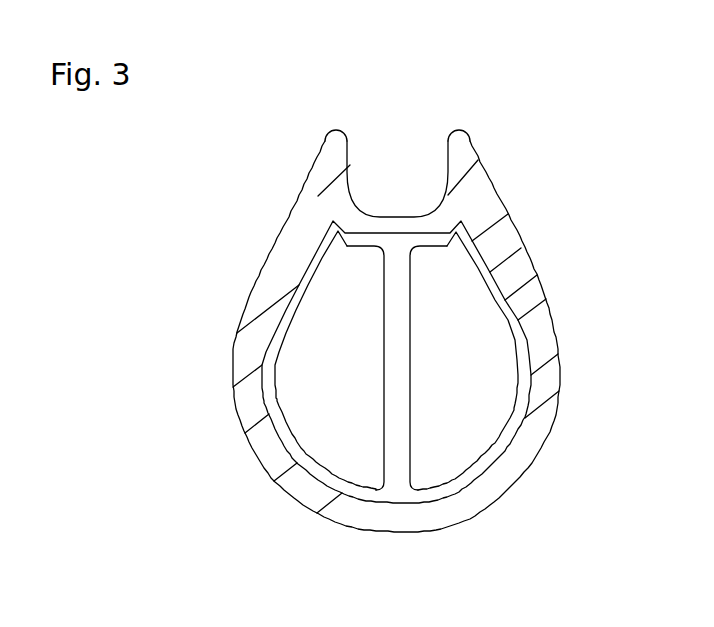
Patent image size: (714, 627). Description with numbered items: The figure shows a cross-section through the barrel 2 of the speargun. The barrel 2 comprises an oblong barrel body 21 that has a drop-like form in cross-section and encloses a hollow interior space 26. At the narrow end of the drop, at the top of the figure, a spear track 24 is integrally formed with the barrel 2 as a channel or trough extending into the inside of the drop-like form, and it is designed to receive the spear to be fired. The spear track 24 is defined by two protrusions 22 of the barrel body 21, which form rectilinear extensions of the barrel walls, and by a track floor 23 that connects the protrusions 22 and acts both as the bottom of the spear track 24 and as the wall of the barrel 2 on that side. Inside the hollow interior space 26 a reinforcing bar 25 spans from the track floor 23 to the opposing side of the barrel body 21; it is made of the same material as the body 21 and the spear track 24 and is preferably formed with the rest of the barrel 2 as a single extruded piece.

The barrel 2 is at (528, 138).
The barrel body 21 is at (543, 312).
The protrusions 22 is at (336, 152).
The track floor 23 is at (366, 226).
The spear track 24 is at (398, 172).
The reinforcing bar 25 is at (398, 416).
The hollow interior space 26 is at (318, 373).